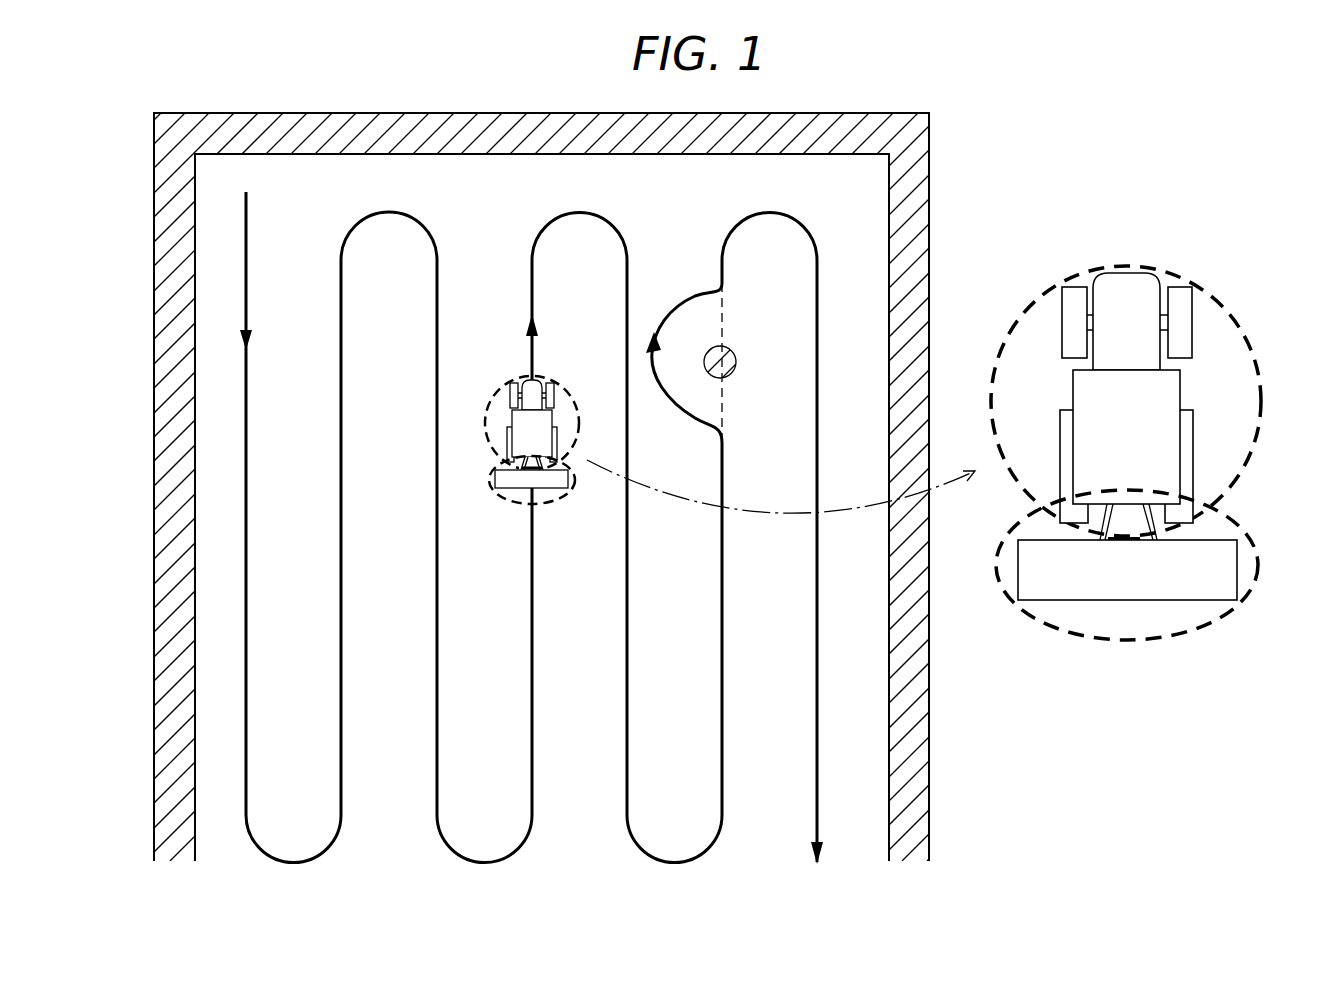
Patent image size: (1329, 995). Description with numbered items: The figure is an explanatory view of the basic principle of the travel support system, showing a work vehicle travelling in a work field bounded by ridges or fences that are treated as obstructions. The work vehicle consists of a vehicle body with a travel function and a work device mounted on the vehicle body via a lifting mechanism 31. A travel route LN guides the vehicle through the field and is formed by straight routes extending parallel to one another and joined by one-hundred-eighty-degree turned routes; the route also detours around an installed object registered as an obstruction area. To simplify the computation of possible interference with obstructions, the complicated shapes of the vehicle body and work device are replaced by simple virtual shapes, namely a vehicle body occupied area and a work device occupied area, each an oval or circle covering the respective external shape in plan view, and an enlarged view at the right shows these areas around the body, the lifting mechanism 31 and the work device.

The lifting mechanism 31 is at (1152, 522).
The travel route LN is at (440, 293).